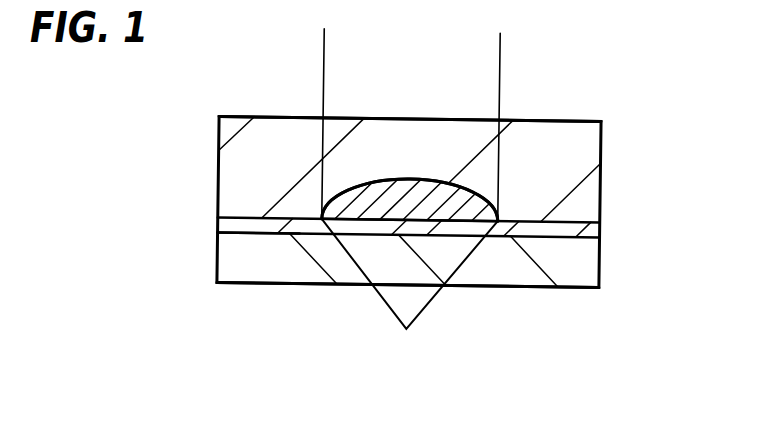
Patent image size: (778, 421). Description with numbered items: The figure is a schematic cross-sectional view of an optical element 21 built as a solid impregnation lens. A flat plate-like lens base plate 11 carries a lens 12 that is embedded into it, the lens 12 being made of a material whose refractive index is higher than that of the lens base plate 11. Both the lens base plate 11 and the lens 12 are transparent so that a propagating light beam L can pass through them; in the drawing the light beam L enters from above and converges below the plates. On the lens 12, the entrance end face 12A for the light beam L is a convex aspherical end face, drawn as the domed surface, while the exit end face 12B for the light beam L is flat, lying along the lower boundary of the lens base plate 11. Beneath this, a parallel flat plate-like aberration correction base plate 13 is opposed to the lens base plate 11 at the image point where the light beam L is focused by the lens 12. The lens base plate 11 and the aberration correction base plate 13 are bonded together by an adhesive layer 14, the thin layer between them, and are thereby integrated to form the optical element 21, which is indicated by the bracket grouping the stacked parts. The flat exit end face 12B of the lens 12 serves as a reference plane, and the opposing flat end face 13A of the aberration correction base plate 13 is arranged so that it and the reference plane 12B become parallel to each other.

The lens base plate 11 is at (583, 144).
The lens 12 is at (467, 215).
The entrance end face 12A is at (353, 184).
The exit end face 12B is at (368, 220).
The aberration correction base plate 13 is at (583, 268).
The flat end face 13A is at (258, 226).
The adhesive layer 14 is at (578, 229).
The optical element 21 is at (693, 130).
The light beam L is at (498, 72).